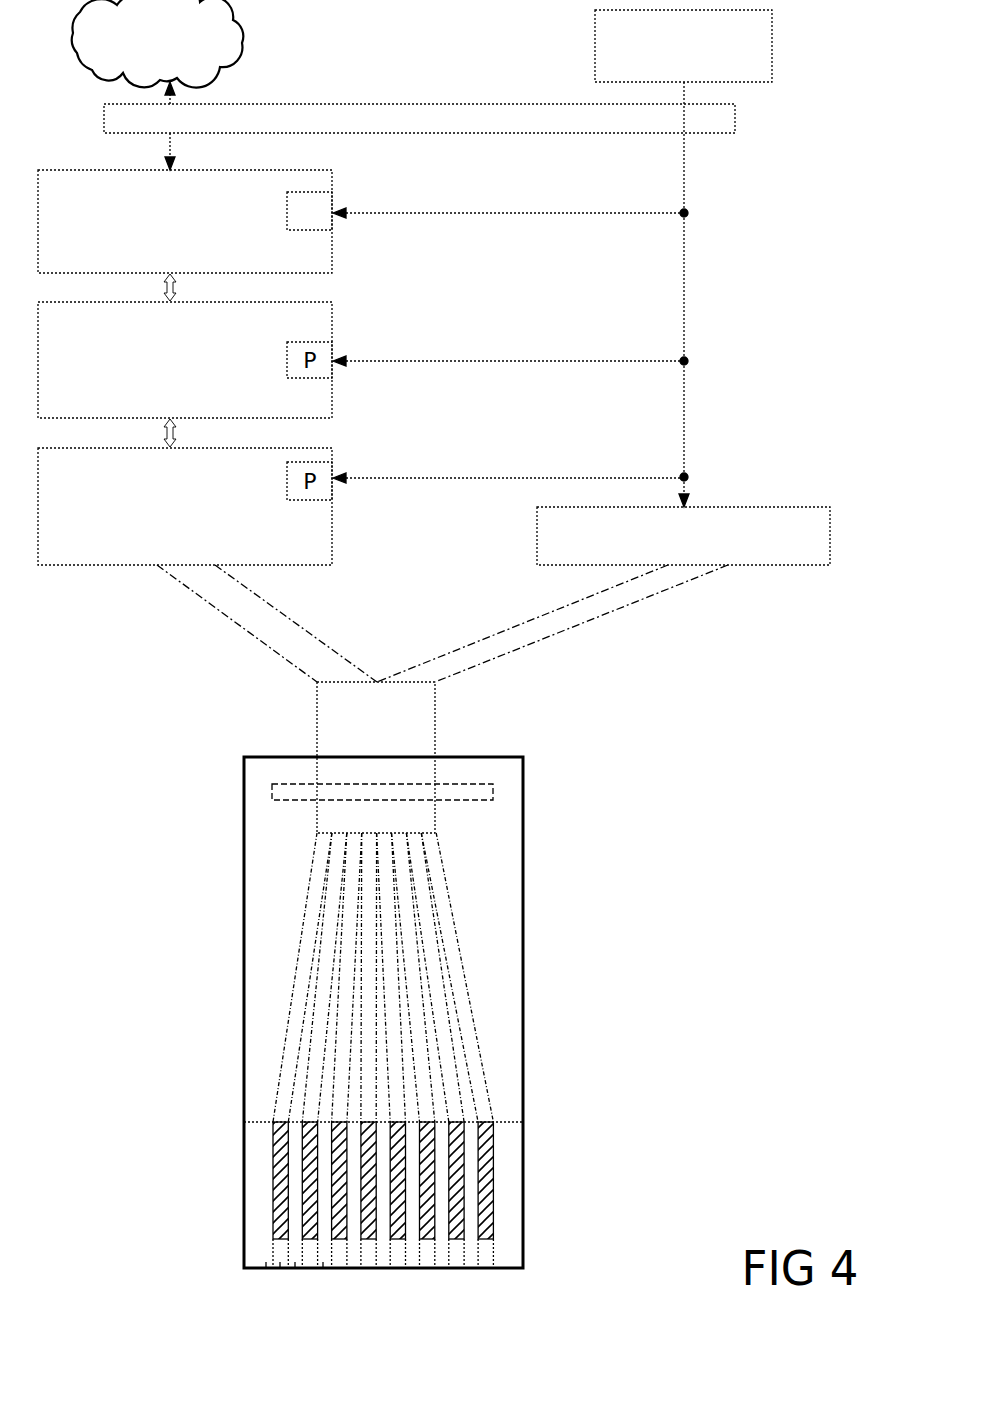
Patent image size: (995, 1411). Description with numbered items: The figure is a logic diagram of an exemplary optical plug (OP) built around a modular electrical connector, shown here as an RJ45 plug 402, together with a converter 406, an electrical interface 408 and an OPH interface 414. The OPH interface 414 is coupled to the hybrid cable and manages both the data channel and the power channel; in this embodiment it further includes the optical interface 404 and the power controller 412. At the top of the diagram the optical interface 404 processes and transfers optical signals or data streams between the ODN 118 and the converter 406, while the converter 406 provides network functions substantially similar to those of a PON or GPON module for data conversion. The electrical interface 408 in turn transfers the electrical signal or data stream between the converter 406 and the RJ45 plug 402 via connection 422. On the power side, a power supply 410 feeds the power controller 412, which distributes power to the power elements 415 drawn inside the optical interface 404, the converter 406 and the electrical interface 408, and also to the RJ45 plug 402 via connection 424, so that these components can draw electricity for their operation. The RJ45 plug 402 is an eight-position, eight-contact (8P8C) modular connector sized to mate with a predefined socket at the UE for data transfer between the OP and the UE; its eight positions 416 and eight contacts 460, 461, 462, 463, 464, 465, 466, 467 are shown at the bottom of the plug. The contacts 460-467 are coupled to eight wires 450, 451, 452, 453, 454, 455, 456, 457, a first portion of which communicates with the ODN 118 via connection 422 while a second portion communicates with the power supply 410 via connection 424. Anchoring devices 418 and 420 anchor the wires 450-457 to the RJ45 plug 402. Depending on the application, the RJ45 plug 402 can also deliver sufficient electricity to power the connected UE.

The ODN 118 is at (178, 63).
The MEC (RJ45 plug) 402 is at (244, 802).
The optical interface 404 is at (165, 261).
The converter 406 is at (165, 401).
The electrical interface 408 is at (165, 548).
The power supply 410 is at (663, 73).
The power controller 412 is at (740, 507).
The OPH interface 414 is at (521, 129).
The power element 415 is at (324, 197).
The position 416 is at (323, 1262).
The anchoring device 418 is at (462, 784).
The anchoring device 420 is at (352, 734).
The connection 422 is at (181, 584).
The connection 424 is at (615, 610).
The wire 450 is at (305, 890).
The wire 451 is at (330, 953).
The wire 452 is at (352, 1020).
The wire 453 is at (368, 1100).
The wire 454 is at (397, 1103).
The wire 455 is at (417, 1017).
The wire 456 is at (435, 945).
The wire 457 is at (440, 910).
The contact 460 is at (276, 1145).
The contact 461 is at (307, 1182).
The contact 462 is at (340, 1200).
The contact 463 is at (368, 1200).
The contact 464 is at (400, 1195).
The contact 465 is at (428, 1190).
The contact 466 is at (458, 1183).
The contact 467 is at (488, 1143).